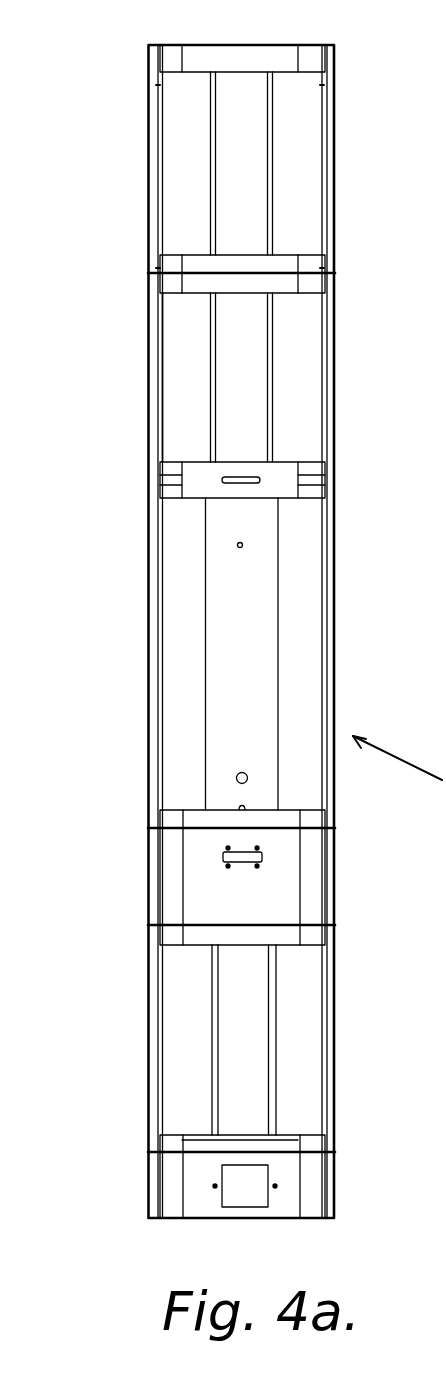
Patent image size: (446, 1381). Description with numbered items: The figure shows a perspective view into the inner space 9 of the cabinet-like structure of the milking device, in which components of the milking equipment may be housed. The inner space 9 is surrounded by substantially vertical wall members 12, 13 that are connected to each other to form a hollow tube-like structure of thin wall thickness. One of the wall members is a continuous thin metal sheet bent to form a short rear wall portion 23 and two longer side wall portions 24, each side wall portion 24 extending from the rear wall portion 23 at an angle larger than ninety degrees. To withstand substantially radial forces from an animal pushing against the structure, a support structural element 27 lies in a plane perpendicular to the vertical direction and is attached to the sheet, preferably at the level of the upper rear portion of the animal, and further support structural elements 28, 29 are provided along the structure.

The further support structural element 29 is at (173, 60).
The rear wall portion 23 is at (232, 127).
The further support structural element 28 is at (197, 263).
The side wall portion 24 is at (183, 353).
The support structural element 27 is at (200, 478).
The inner space 9 is at (228, 622).
The wall member 12 is at (197, 862).
The wall member 13 is at (198, 1183).